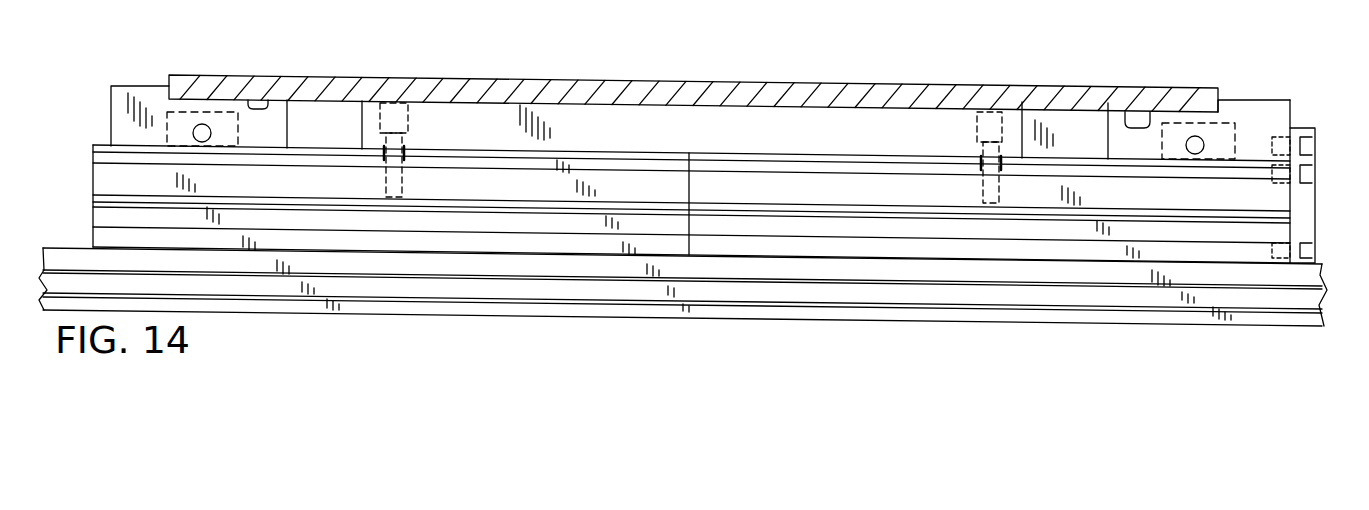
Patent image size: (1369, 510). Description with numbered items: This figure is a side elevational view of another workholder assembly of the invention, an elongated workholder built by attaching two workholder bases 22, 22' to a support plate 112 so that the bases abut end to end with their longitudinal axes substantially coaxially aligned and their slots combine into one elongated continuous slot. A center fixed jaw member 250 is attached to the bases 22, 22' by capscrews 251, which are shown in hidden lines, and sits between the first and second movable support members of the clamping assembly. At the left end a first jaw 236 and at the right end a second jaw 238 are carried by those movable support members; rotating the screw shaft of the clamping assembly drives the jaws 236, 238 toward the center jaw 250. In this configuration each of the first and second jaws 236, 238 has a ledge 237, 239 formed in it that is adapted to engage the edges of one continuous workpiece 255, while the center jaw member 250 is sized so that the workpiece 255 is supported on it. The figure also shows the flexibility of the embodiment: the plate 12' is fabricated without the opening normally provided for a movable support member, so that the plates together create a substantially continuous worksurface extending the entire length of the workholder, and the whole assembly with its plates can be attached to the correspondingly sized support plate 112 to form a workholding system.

The plate 12' is at (671, 97).
The workholder base 22 is at (683, 321).
The workholder base 22' is at (691, 224).
The support plate 112 is at (548, 283).
The first jaw member 236 is at (132, 86).
The ledge 237 is at (272, 103).
The second jaw member 238 is at (1252, 112).
The ledge 239 is at (1152, 120).
The center jaw member 250 is at (737, 141).
The capscrews 251 is at (412, 102).
The workpiece 255 is at (640, 81).